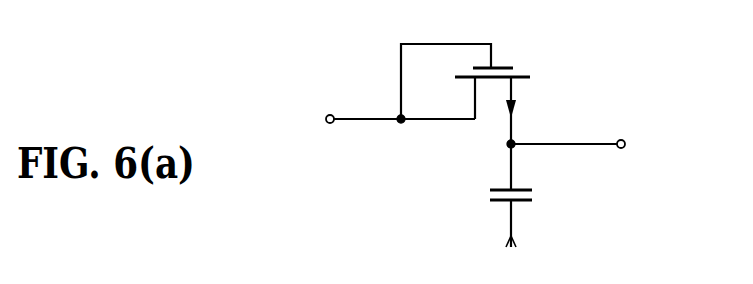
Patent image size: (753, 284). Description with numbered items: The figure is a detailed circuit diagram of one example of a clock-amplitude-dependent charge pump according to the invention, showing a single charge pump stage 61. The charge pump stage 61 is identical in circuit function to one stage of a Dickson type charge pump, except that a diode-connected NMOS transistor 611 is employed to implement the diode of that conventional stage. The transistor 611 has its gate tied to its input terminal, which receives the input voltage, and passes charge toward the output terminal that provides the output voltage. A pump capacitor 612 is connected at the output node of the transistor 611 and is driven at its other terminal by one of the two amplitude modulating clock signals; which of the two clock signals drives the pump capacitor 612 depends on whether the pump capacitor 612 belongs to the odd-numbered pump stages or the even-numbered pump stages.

The charge pump stage 61 is at (649, 58).
The diode-connected NMOS transistor 611 is at (540, 57).
The pump capacitor 612 is at (487, 196).